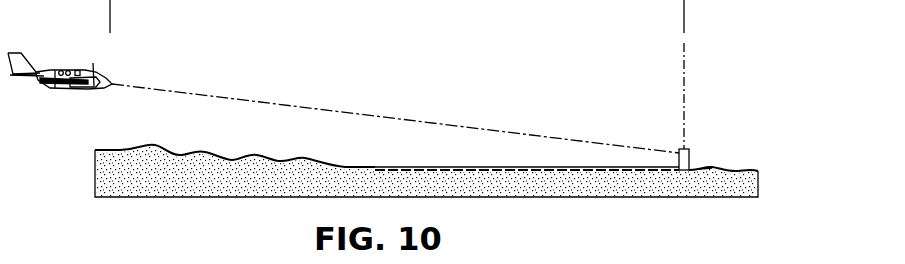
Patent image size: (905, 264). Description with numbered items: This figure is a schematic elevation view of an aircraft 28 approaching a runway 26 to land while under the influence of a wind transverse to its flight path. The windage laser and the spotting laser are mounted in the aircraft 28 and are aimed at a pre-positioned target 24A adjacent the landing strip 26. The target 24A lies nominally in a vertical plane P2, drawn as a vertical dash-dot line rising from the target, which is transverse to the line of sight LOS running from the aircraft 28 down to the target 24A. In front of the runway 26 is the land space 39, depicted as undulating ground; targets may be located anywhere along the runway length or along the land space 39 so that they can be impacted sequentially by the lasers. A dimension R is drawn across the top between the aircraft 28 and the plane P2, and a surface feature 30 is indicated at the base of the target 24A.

The aircraft 28 is at (50, 90).
The land space 39 is at (200, 151).
The runway 26 is at (405, 166).
The target 24A is at (690, 151).
The surface at target 30 is at (690, 164).
The vertical plane P2 is at (685, 61).
The line of sight LOS is at (403, 120).
The range R is at (684, 16).